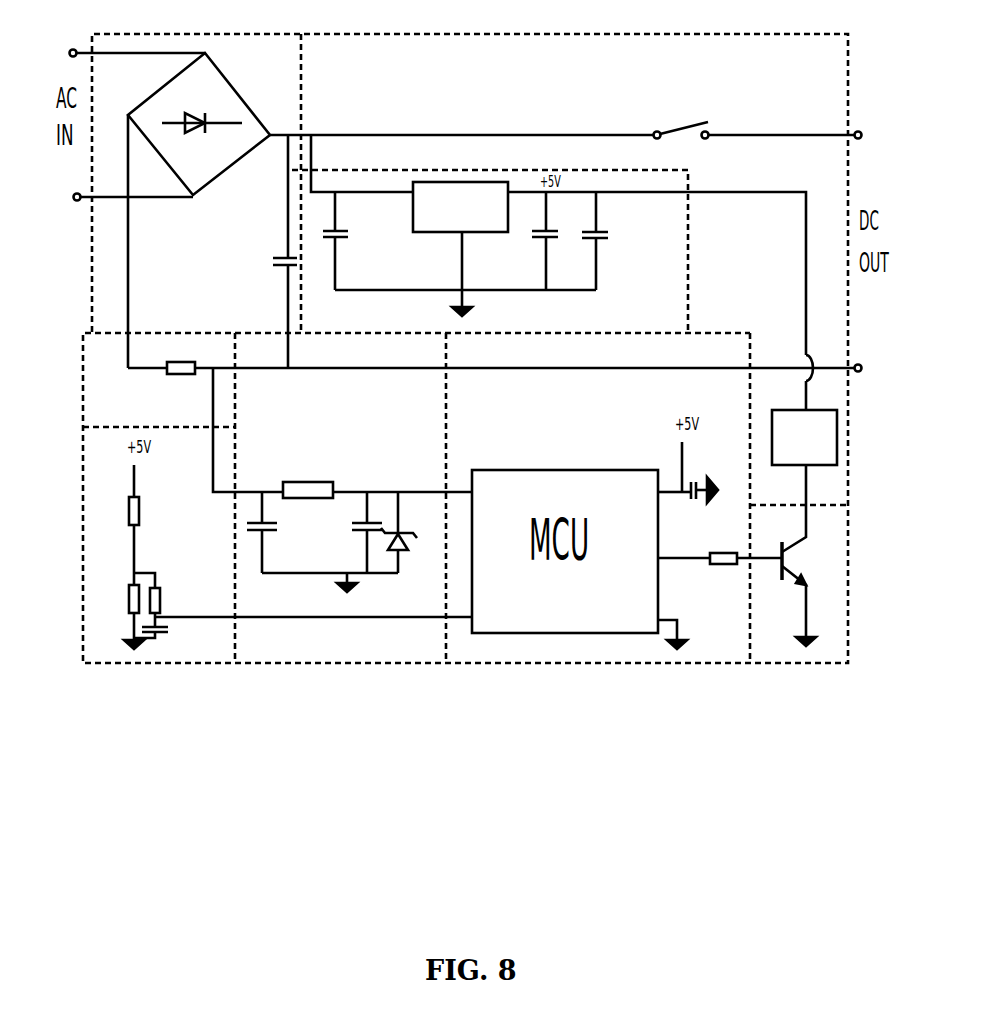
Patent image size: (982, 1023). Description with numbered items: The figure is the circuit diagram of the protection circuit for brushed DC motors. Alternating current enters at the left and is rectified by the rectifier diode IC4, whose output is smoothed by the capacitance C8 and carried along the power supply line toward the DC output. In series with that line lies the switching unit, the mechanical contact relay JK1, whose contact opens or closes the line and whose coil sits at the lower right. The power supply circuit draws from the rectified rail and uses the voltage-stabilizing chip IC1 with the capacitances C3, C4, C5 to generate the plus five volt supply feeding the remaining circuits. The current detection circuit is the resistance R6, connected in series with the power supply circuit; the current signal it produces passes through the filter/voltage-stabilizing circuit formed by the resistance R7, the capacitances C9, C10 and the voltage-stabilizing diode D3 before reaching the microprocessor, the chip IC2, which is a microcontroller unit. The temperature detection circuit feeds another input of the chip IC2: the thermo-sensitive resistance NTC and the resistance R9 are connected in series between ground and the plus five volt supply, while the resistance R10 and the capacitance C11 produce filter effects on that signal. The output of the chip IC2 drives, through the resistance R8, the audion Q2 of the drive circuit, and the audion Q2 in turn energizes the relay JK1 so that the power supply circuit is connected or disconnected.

The rectifier diode IC4 is at (199, 142).
The mechanical contact relay JK1 is at (746, 277).
The capacitance C8 is at (297, 251).
The voltage-stabilizing chip IC1 is at (460, 249).
The capacitance C3 is at (346, 241).
The capacitance C4 is at (537, 241).
The capacitance C5 is at (592, 241).
The resistance R6 is at (181, 354).
The resistance R7 is at (308, 477).
The capacitance C9 is at (267, 532).
The capacitance C10 is at (354, 532).
The voltage-stabilizing diode D3 is at (408, 532).
The chip IC2 is at (565, 551).
The resistance R8 is at (723, 544).
The audion Q2 is at (790, 555).
The thermo-sensitive resistance NTC is at (119, 510).
The resistance R9 is at (122, 599).
The resistance R10 is at (168, 601).
The capacitance C11 is at (166, 627).